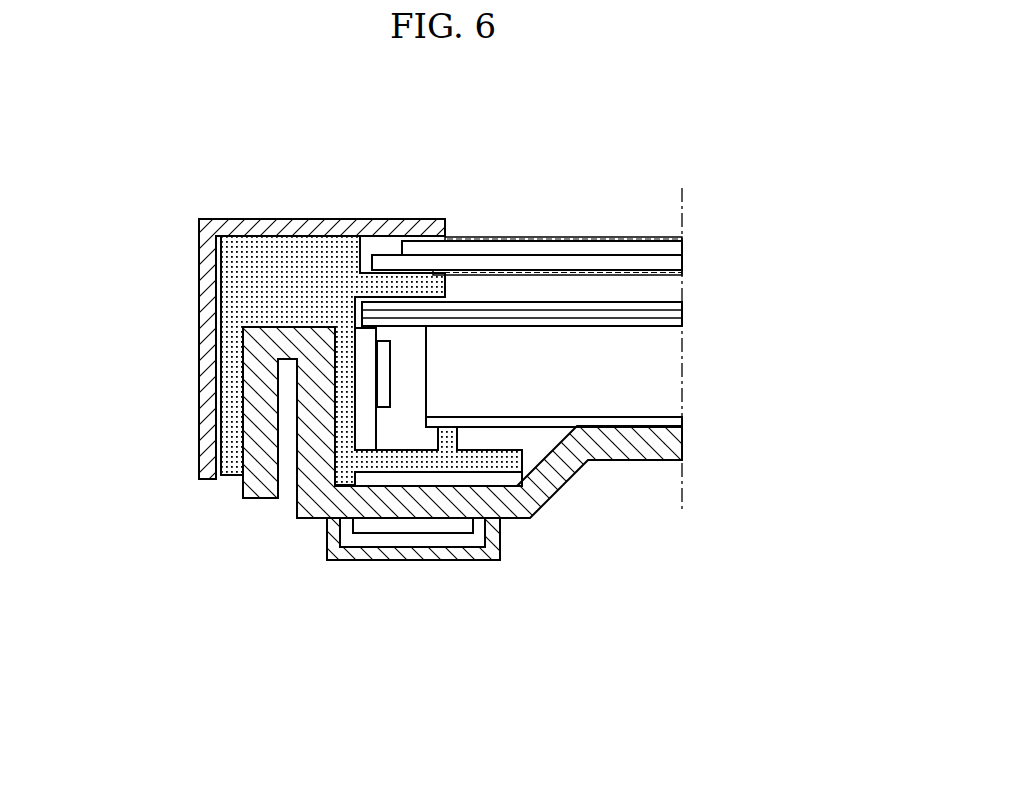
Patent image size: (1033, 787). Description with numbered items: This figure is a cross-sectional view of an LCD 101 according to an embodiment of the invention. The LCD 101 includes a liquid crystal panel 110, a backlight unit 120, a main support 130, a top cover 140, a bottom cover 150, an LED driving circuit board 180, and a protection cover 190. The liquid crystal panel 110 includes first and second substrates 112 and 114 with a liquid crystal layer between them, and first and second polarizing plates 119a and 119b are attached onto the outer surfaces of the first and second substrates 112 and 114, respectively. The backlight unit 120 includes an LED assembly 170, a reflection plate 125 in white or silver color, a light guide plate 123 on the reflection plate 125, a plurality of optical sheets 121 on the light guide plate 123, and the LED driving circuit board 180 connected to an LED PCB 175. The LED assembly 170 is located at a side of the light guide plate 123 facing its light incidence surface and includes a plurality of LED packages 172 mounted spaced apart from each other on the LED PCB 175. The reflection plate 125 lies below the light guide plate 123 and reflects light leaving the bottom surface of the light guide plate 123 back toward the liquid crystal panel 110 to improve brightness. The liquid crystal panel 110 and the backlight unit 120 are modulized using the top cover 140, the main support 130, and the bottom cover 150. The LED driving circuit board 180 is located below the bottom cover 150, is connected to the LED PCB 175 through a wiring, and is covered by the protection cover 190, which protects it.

The LCD 101 is at (652, 136).
The liquid crystal panel 110 is at (527, 206).
The first substrate 112 is at (600, 260).
The second substrate 114 is at (569, 247).
The first polarizing plate 119a is at (516, 270).
The second polarizing plate 119b is at (467, 237).
The backlight unit 120 is at (436, 541).
The optical sheets 121 is at (332, 748).
The light guide plate 123 is at (378, 747).
The reflection plate 125 is at (512, 422).
The main support 130 is at (240, 277).
The top cover 140 is at (312, 228).
The bottom cover 150 is at (612, 450).
The LED assembly 170 is at (276, 500).
The LED packages 172 is at (383, 380).
The LED PCB 175 is at (363, 432).
The LED driving circuit board 180 is at (285, 737).
The protection cover 190 is at (433, 558).